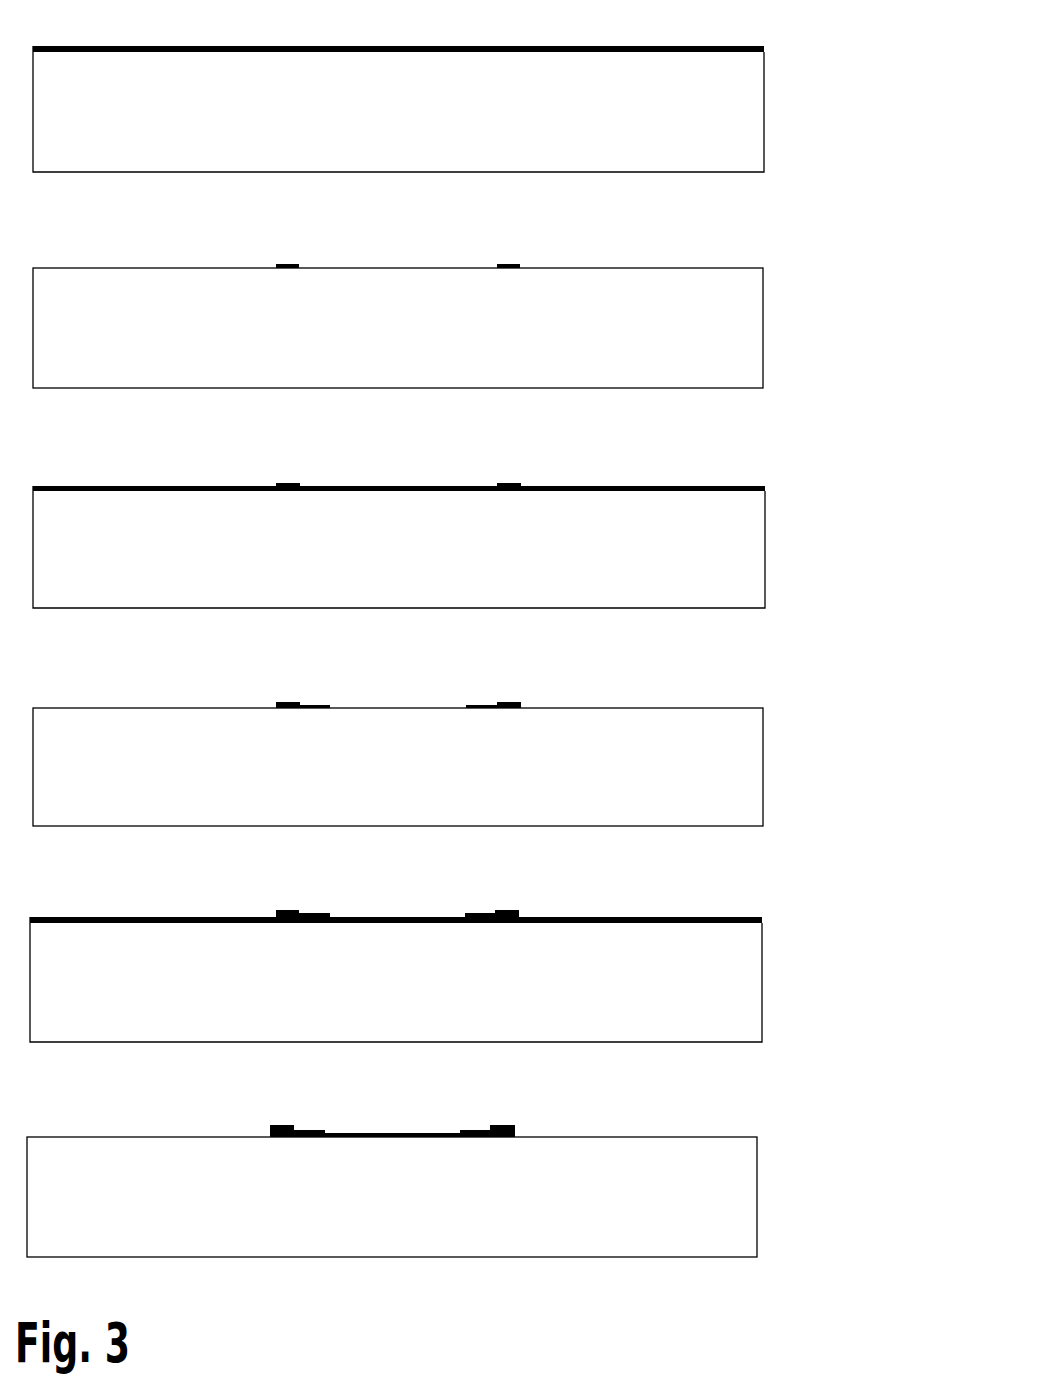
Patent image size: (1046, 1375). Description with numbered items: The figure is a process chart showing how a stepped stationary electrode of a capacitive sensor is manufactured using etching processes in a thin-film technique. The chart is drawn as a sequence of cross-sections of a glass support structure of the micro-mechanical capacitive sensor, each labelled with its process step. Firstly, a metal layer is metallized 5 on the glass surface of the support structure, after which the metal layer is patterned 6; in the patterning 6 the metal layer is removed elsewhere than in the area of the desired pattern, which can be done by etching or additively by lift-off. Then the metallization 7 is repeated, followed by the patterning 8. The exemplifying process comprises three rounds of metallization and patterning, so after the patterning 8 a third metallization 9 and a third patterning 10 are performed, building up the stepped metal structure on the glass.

The metallization 5 is at (764, 137).
The patterning 6 is at (764, 347).
The metallization 7 is at (767, 573).
The patterning 8 is at (763, 790).
The third metallization 9 is at (763, 1003).
The third patterning 10 is at (758, 1217).